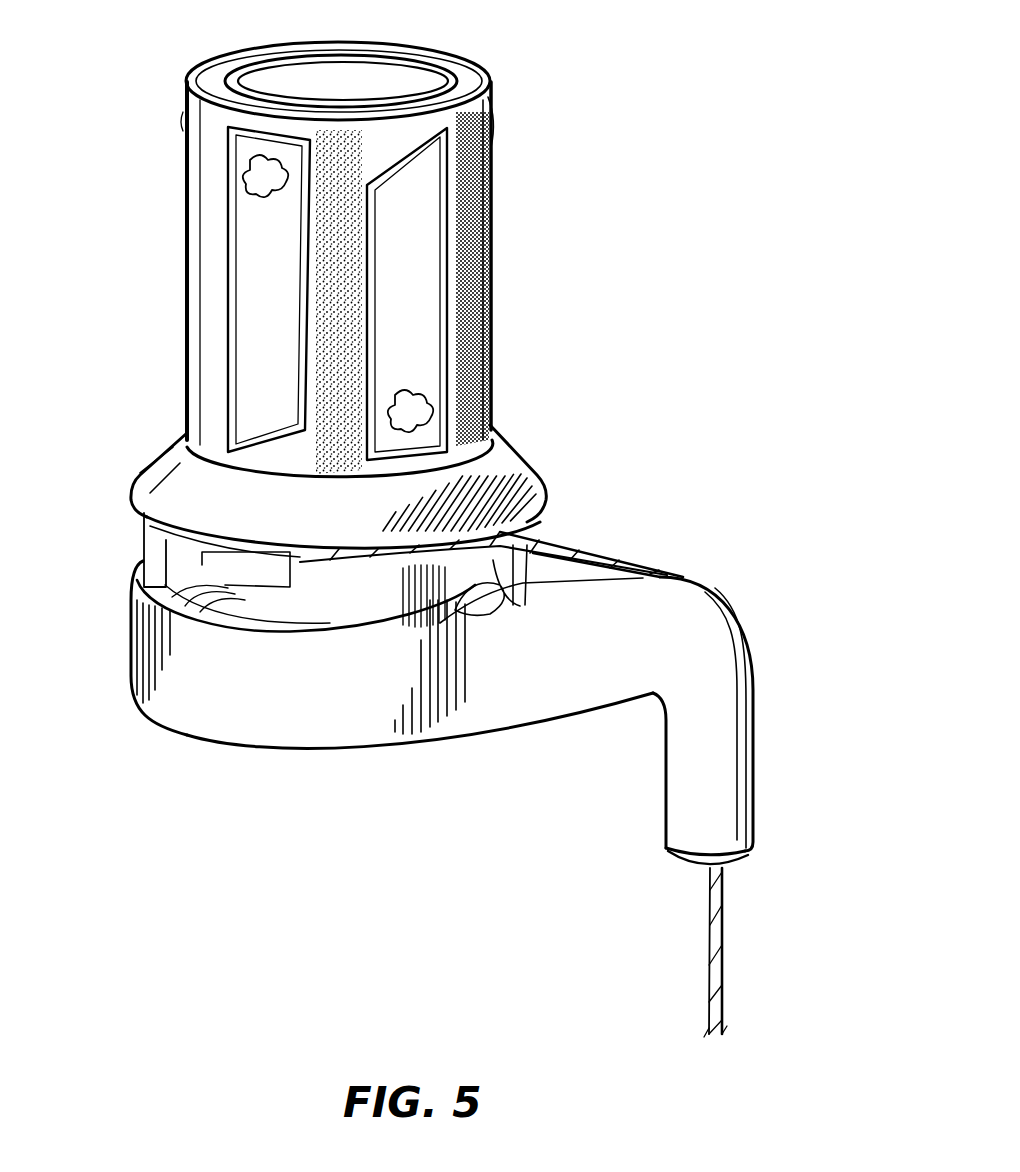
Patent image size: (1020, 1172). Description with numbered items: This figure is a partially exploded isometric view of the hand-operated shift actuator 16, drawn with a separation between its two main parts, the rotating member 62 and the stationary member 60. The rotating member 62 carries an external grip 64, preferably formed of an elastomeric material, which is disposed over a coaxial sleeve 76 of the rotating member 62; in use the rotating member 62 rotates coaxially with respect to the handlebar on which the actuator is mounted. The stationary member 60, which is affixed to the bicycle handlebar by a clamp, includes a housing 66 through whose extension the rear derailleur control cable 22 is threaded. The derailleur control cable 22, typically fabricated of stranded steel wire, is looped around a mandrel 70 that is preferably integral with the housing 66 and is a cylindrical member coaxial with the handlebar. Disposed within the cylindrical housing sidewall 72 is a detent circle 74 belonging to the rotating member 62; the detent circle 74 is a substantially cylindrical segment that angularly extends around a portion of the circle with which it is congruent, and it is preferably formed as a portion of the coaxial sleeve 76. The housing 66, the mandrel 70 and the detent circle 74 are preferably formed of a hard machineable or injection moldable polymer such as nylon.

The shift actuator 16 is at (815, 313).
The derailleur control cable 22 is at (726, 951).
The stationary member 60 is at (795, 694).
The rotating member 62 is at (545, 147).
The external grip 64 is at (478, 275).
The housing 66 is at (363, 733).
The mandrel 70 is at (350, 610).
The cylindrical housing sidewall 72 is at (228, 702).
The detent circle 74 is at (163, 535).
The coaxial sleeve 76 is at (455, 75).